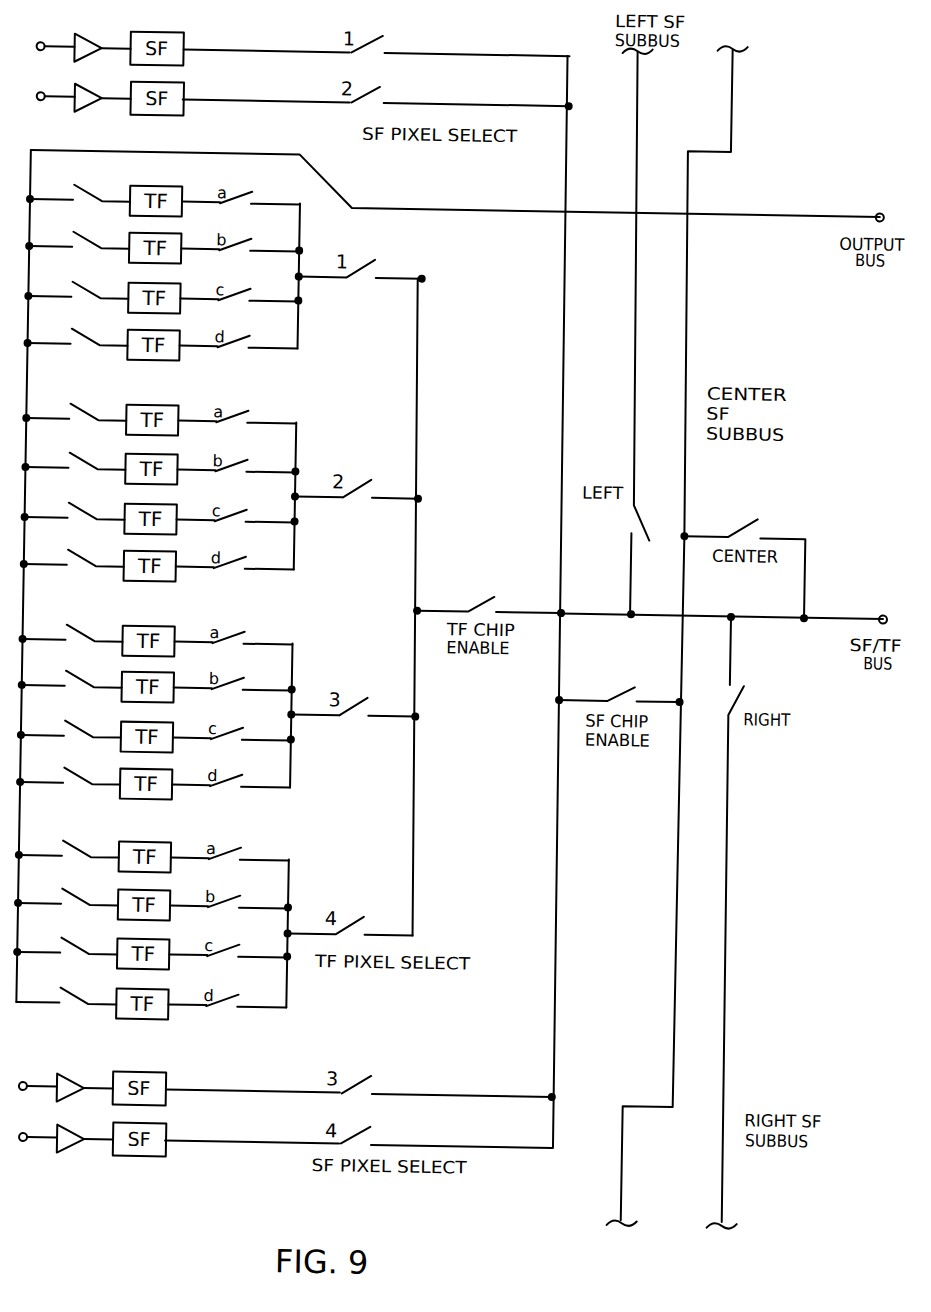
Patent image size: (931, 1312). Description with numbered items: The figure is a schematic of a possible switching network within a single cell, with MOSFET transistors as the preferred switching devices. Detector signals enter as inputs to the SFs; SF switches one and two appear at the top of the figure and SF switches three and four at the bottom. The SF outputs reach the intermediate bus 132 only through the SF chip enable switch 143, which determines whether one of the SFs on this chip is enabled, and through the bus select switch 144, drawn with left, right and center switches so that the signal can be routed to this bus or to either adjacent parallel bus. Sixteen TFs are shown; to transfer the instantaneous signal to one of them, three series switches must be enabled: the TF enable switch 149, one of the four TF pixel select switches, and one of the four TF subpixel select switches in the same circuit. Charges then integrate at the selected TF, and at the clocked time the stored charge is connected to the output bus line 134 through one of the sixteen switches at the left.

The output bus line 134 is at (777, 202).
The intermediate bus 132 is at (827, 604).
The bus select switch 144 is at (776, 583).
The TF enable switch 149 is at (500, 579).
The SF chip enable switch 143 is at (619, 667).